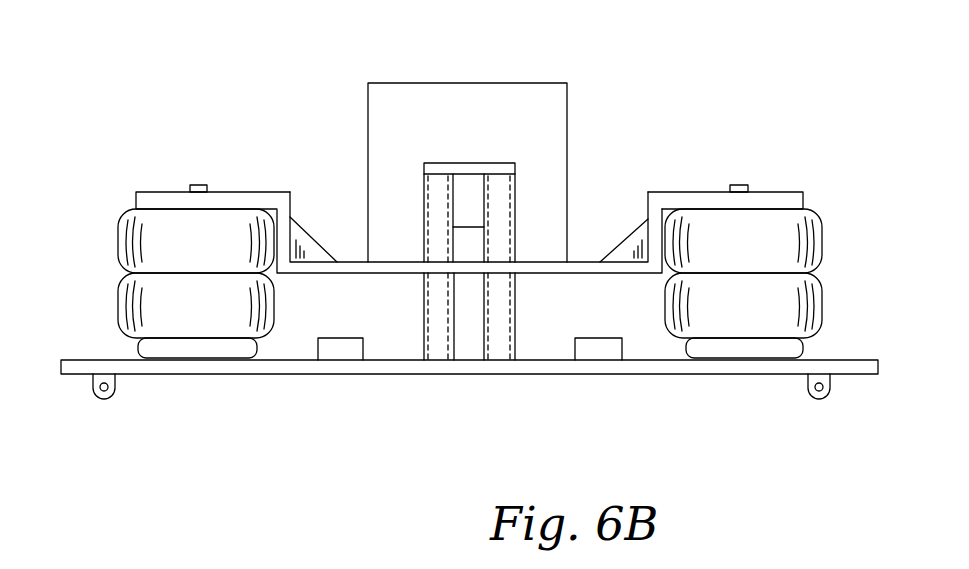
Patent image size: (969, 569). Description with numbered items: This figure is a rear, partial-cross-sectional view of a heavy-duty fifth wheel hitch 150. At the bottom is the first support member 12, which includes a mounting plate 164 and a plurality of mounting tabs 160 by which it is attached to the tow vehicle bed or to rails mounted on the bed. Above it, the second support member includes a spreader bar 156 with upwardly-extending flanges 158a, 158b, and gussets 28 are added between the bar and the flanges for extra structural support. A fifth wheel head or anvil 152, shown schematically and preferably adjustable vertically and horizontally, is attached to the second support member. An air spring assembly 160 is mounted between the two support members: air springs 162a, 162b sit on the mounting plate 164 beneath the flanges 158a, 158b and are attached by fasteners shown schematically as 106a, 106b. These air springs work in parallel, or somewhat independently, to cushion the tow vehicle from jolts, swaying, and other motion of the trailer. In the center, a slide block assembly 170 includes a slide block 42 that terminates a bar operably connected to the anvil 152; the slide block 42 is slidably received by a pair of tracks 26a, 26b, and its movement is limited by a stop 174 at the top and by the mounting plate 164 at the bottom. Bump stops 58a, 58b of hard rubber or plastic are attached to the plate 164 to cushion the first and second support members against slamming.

The first support member 12 is at (617, 375).
The track 26a is at (426, 200).
The track 26b is at (512, 192).
The gusset 28 is at (315, 233).
The slide block 42 is at (470, 225).
The bump stop 58a is at (338, 338).
The bump stop 58b is at (606, 338).
The fastener 106a is at (200, 183).
The fastener 106b is at (738, 183).
The fifth wheel hitch 150 is at (643, 113).
The anvil 152 is at (437, 83).
The spreader bar 156 is at (326, 274).
The flange 158a is at (157, 190).
The flange 158b is at (782, 192).
The mounting tab 160 is at (116, 384).
The air spring 162a is at (118, 253).
The air spring 162b is at (823, 252).
The mounting plate 164 is at (402, 374).
The slide block assembly 170 is at (424, 248).
The stop 174 is at (468, 163).